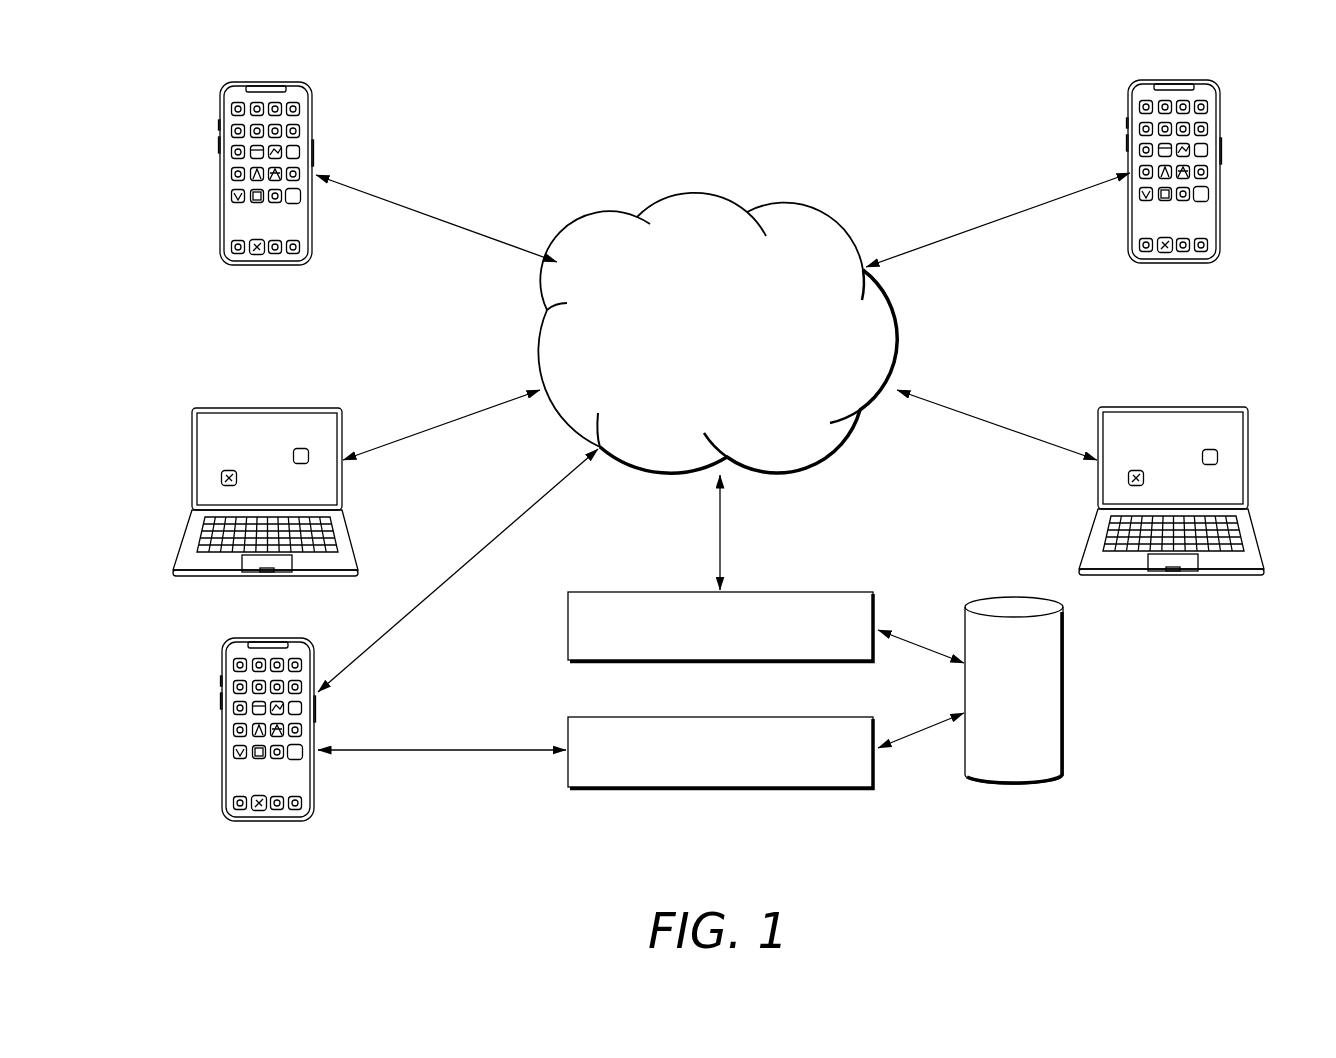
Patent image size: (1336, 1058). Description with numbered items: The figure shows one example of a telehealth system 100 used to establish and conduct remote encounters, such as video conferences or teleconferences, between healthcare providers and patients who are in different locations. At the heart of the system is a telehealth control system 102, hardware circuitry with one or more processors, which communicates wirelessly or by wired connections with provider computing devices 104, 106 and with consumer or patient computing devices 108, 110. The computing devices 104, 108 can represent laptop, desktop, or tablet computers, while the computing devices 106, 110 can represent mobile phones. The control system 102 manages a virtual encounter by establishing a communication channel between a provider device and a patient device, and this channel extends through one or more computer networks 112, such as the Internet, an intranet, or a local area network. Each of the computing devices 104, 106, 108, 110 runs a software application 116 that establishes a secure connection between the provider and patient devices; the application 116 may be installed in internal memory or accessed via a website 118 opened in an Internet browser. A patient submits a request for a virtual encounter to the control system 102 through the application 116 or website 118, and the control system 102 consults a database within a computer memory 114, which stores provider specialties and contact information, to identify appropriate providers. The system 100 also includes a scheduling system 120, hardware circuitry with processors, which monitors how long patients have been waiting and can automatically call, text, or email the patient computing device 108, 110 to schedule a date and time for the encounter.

The telehealth system 100 is at (168, 92).
The telehealth control system 102 is at (820, 592).
The provider computing device 104 is at (1192, 80).
The provider computing device 106 is at (1200, 407).
The patient computing device 108 is at (255, 82).
The patient computing device 110 is at (237, 408).
The computer network 112 is at (803, 203).
The computer memory 114 is at (1066, 695).
The software application 116 is at (299, 202).
The website 118 is at (260, 255).
The scheduling system 120 is at (820, 717).